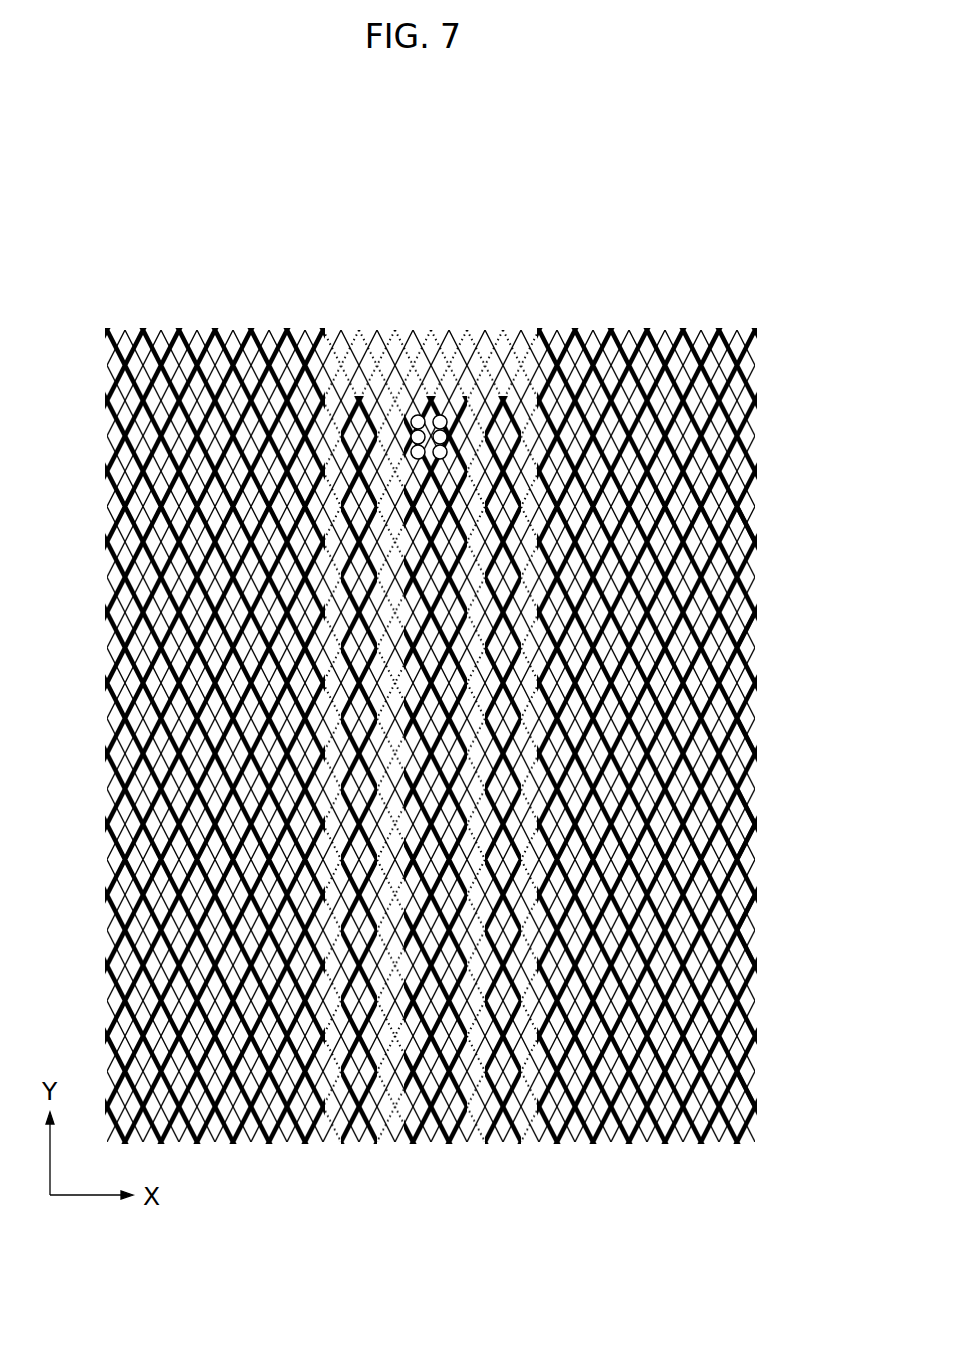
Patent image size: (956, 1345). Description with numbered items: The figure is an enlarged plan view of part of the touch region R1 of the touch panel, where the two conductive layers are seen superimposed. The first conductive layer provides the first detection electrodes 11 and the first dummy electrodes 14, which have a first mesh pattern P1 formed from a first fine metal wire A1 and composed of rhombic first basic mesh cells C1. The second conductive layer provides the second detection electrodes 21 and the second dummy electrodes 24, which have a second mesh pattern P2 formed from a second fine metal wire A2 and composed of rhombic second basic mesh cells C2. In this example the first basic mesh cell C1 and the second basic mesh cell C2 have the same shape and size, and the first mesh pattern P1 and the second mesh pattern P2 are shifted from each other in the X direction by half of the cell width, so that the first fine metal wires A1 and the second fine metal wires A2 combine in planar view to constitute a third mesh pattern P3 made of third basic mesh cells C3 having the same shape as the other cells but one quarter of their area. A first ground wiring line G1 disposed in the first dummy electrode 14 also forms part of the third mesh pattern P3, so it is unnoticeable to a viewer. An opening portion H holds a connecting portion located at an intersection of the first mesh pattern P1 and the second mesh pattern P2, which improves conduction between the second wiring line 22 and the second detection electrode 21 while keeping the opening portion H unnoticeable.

The first detection electrode 11 is at (755, 340).
The first dummy electrode 14 is at (323, 309).
The second detection electrode 21 is at (110, 1071).
The second dummy electrode 24 is at (89, 648).
The second wiring line 22 is at (430, 1136).
The first ground wiring line G1 is at (358, 1138).
The opening portion H is at (412, 415).
The touch region R1 is at (768, 350).
The first mesh pattern P1 is at (750, 530).
The second mesh pattern P2 is at (750, 638).
The third mesh pattern P3 is at (750, 744).
The first fine metal wire A1 is at (750, 817).
The second fine metal wire A2 is at (750, 851).
The first basic mesh cell C1 is at (750, 897).
The second basic mesh cell C2 is at (745, 930).
The third basic mesh cell C3 is at (750, 1097).